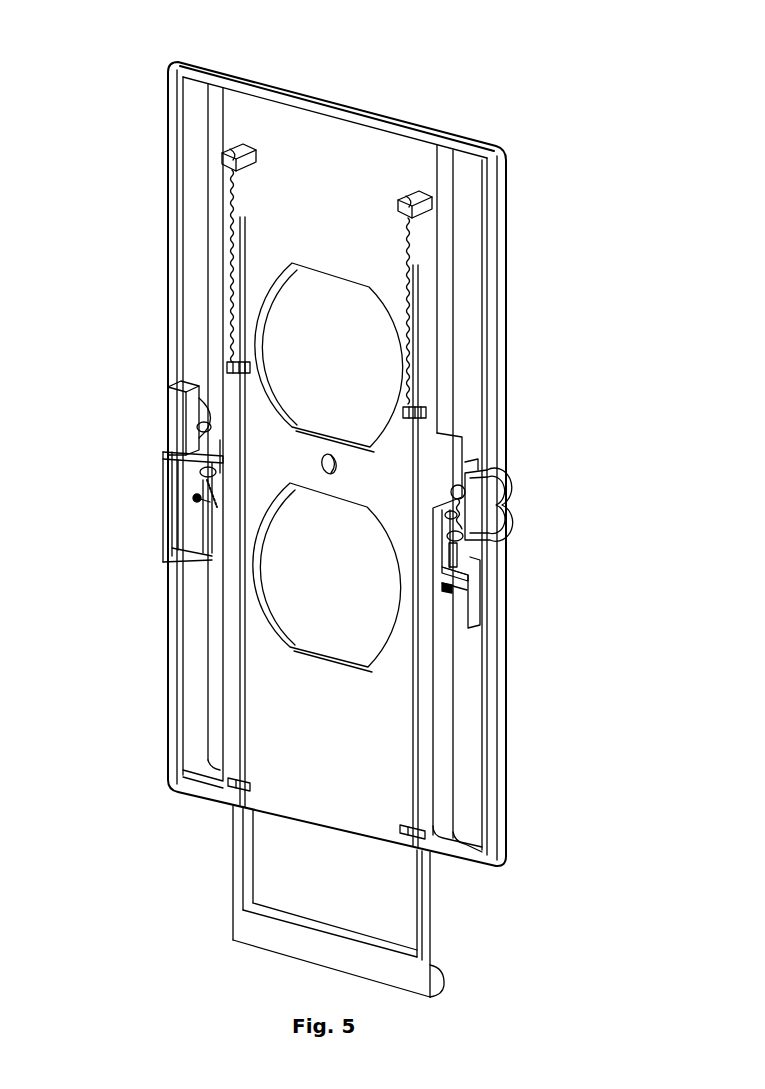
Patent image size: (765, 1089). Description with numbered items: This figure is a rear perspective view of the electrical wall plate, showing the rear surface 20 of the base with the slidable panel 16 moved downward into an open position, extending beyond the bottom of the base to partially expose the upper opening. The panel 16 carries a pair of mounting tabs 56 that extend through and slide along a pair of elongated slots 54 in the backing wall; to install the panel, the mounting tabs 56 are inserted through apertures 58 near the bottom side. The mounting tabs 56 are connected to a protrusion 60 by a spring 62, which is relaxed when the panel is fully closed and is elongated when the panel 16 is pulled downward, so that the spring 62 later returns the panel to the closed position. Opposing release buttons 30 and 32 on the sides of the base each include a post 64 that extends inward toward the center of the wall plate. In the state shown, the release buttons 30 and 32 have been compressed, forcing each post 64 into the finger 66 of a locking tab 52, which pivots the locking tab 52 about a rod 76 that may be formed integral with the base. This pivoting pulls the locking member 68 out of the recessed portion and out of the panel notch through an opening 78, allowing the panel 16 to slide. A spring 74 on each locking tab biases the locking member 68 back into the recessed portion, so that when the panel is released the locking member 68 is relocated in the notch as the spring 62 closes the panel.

The slidable panel 16 is at (347, 903).
The rear surface 20 is at (313, 790).
The release button 30 is at (180, 422).
The release button 32 is at (480, 500).
The locking tab 52 is at (200, 525).
The elongated slot 54 is at (412, 772).
The mounting tab 56 is at (243, 365).
The aperture 58 is at (232, 783).
The protrusion 60 is at (243, 152).
The spring 62 is at (240, 220).
The post 64 is at (462, 493).
The finger 66 is at (462, 517).
The locking member 68 is at (455, 573).
The spring 74 is at (203, 500).
The rod 76 is at (463, 550).
The opening 78 is at (443, 582).